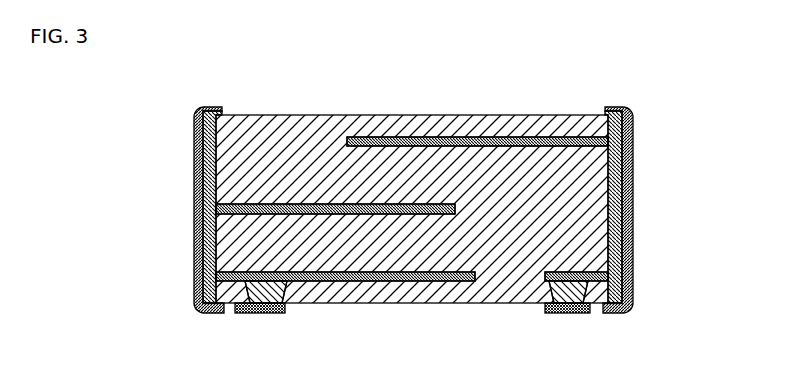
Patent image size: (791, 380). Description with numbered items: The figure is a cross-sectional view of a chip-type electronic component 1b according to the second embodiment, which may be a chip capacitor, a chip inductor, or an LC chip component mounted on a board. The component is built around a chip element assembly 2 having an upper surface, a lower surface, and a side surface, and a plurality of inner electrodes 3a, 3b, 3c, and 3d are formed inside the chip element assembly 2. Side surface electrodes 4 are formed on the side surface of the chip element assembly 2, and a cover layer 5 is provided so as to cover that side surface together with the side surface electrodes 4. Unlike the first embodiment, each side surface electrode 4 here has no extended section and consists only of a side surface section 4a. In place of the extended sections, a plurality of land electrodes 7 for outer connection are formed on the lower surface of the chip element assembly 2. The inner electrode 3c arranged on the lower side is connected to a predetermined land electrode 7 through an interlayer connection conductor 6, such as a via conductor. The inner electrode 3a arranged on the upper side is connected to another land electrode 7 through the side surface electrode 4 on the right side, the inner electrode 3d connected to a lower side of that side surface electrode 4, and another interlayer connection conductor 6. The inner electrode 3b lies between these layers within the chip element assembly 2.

The chip-type electronic component 1b is at (605, 62).
The chip element assembly 2 is at (400, 304).
The inner electrode 3a is at (490, 137).
The inner electrode 3b is at (312, 204).
The inner electrode 3c is at (355, 281).
The inner electrode 3d is at (612, 268).
The side surface electrode 4 is at (436, 179).
The side surface section 4a is at (215, 201).
The cover layer 5 is at (607, 213).
The interlayer connection conductor 6 is at (272, 298).
The land electrode 7 is at (258, 313).